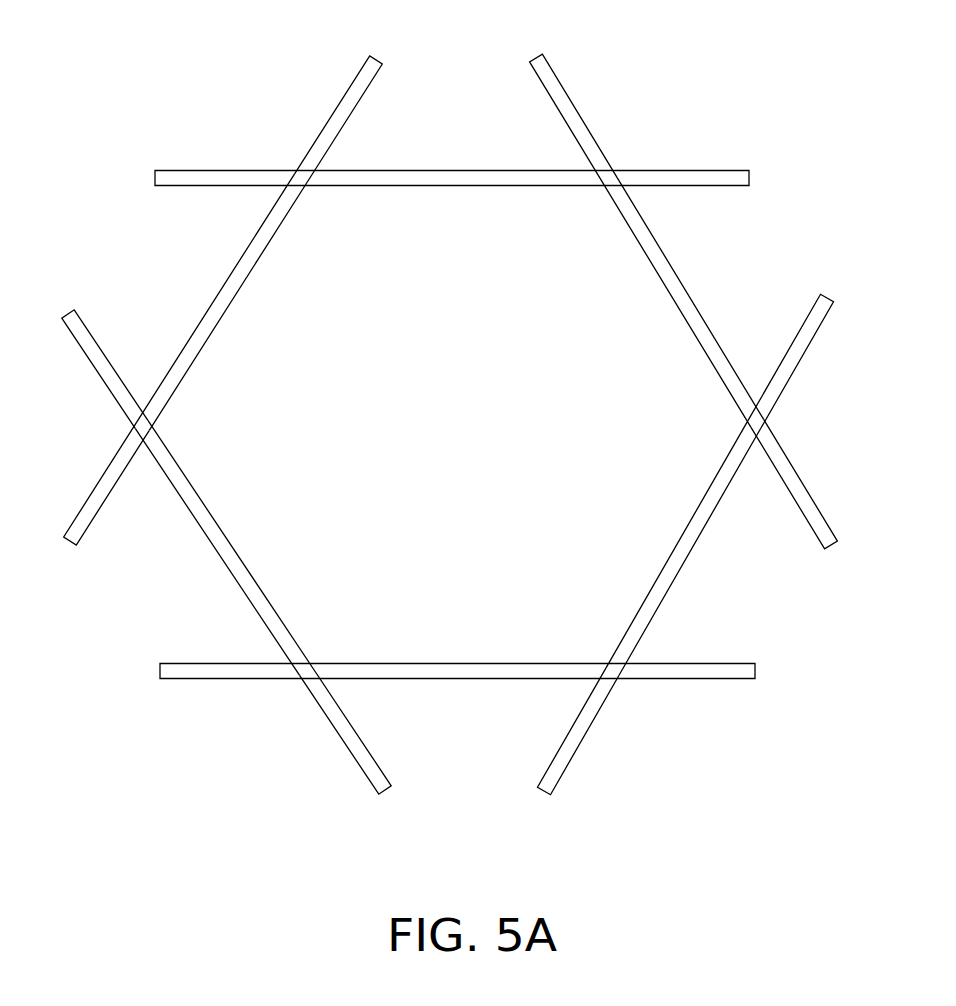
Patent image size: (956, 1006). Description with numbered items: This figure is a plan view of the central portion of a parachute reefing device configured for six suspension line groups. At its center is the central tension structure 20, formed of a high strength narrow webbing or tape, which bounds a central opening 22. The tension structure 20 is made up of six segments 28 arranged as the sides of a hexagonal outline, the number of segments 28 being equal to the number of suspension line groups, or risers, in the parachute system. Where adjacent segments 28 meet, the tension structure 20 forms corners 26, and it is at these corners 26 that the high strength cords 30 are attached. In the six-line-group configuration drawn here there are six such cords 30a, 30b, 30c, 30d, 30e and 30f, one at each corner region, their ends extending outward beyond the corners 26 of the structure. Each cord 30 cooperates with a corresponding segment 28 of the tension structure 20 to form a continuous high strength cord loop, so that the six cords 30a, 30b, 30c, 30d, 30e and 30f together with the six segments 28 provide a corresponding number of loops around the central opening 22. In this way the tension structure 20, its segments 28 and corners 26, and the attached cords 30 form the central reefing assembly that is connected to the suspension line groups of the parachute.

The central tension structure 20 is at (453, 419).
The central opening 22 is at (330, 338).
The corners 26 is at (766, 423).
The segment 28 is at (400, 170).
The high strength cord 30 is at (453, 419).
The high strength cord 30a is at (360, 73).
The high strength cord 30b is at (707, 167).
The high strength cord 30c is at (818, 532).
The high strength cord 30d is at (350, 760).
The high strength cord 30e is at (83, 527).
The high strength cord 30f is at (180, 172).